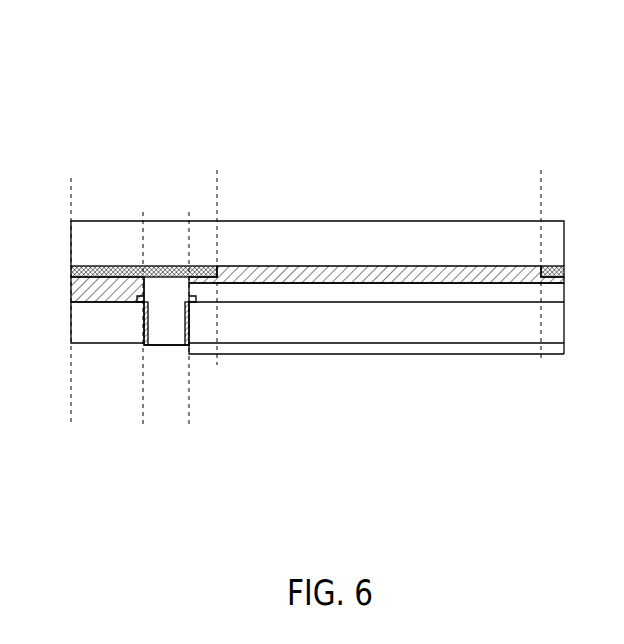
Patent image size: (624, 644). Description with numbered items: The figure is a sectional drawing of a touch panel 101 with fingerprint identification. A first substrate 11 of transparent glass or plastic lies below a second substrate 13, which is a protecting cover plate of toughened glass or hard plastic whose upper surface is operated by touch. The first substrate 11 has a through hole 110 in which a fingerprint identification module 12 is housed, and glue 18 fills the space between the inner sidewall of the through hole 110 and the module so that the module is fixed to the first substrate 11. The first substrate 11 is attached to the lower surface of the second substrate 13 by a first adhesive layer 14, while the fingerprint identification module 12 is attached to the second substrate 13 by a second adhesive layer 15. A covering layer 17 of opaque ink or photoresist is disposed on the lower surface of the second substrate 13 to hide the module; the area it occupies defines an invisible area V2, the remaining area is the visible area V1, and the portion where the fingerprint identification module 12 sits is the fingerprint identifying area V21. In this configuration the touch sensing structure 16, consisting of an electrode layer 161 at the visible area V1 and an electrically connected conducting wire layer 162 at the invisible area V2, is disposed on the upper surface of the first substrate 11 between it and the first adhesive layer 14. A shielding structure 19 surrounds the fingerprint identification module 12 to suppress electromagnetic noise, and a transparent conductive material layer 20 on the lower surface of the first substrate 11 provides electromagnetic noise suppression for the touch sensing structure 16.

The touch panel with fingerprint identification 101 is at (140, 84).
The first substrate 11 is at (537, 320).
The fingerprint identification module 12 is at (155, 337).
The second substrate 13 is at (541, 230).
The first adhesive layer 14 is at (82, 288).
The second adhesive layer 15 is at (143, 287).
The touch sensing structure 16 is at (333, 190).
The electrode layer 161 is at (325, 293).
The conducting wire layer 162 is at (208, 295).
The covering layer 17 is at (71, 269).
The glue 18 is at (144, 328).
The shielding structure 19 is at (138, 301).
The conductive material layer 20 is at (303, 347).
The through hole 110 is at (162, 346).
The visible area V1 is at (457, 266).
The invisible area V2 is at (144, 297).
The fingerprint identifying area V21 is at (166, 318).